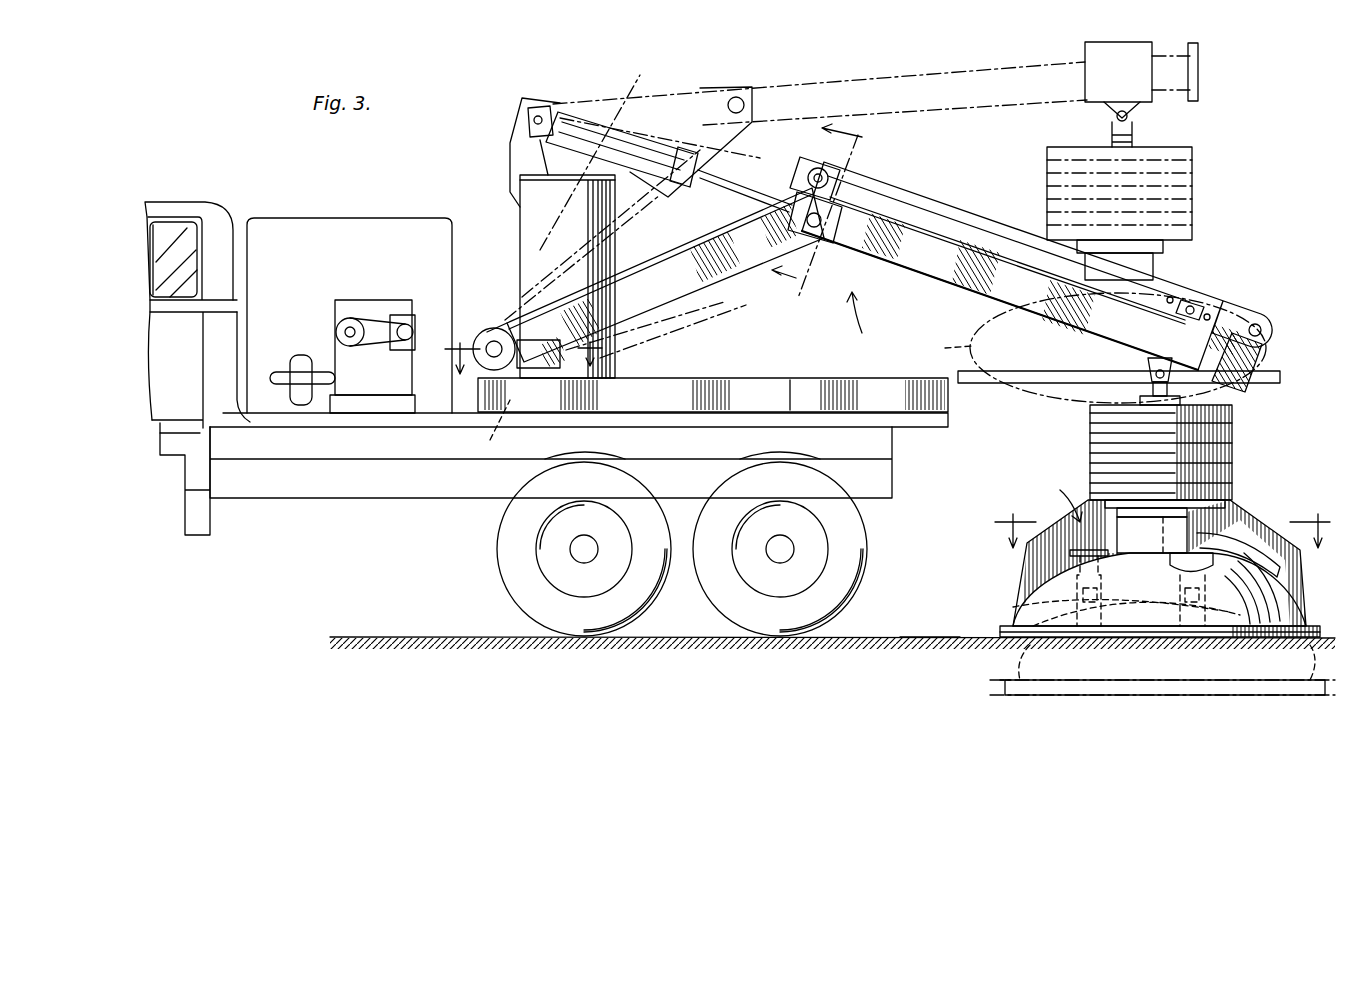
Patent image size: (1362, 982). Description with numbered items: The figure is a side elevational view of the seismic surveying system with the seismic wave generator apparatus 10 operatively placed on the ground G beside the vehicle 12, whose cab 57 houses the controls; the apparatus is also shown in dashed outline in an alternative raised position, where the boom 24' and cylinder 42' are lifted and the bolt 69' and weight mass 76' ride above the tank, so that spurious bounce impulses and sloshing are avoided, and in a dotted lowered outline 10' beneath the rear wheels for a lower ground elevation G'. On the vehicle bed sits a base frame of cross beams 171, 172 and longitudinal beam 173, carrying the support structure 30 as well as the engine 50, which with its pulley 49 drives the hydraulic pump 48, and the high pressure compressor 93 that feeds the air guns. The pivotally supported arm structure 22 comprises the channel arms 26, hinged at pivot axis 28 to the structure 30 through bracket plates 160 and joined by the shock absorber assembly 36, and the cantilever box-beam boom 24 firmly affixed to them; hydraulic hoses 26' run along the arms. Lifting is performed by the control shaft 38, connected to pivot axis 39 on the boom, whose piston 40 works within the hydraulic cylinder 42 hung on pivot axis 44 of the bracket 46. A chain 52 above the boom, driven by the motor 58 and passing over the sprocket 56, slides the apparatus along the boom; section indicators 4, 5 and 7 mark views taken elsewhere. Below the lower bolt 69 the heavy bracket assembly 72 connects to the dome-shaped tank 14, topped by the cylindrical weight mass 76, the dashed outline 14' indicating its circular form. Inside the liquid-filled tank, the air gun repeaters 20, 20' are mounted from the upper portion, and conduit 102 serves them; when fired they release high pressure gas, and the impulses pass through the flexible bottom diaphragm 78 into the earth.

The cab 57 is at (228, 202).
The vehicle 12 is at (432, 490).
The high pressure compressor 93 is at (365, 218).
The engine 50 is at (358, 300).
The pulley 49 is at (345, 332).
The hydraulic pump 48 is at (420, 315).
The support structure 30 is at (520, 232).
The bracket 46 is at (520, 95).
The pivot axis 44 is at (540, 108).
The hydraulic cylinder 42 is at (649, 127).
The raised cylinder position 42' is at (603, 143).
The piston 40 is at (655, 185).
The channel arms 26 is at (668, 238).
The hydraulic hose 26' is at (623, 252).
The control shaft 38 is at (740, 195).
The pivot axis 28 is at (488, 326).
The shock absorber assembly 36 is at (475, 333).
The bracket plates 160 is at (550, 369).
The motor 58 is at (810, 162).
The pivot axis 39 is at (825, 226).
The section line 5- 5 is at (824, 212).
The boom 24 is at (1037, 266).
The raised boom position 24' is at (875, 74).
The chain 52 is at (1205, 298).
The sprocket 56 is at (1272, 330).
The raised pivot position 69' is at (1094, 124).
The raised weight position 76' is at (1163, 213).
The arm structure 22 is at (869, 321).
The bottom 78 is at (1048, 408).
The ring outline 14' is at (945, 348).
The bracket assembly 72 is at (1242, 400).
The lower bolt 69 is at (1133, 376).
The weight mass 76 is at (1188, 479).
The tank 14 is at (1170, 568).
The air gun repeater 20 is at (1045, 588).
The air gun repeater 20' is at (1214, 589).
The conduit 102 is at (1265, 540).
The section line 7- 7 is at (1163, 541).
The seismic wave generator apparatus 10 is at (1064, 496).
The section line 4- 4 is at (524, 369).
The cross beam 172 is at (615, 395).
The cross beam 171 is at (487, 427).
The longitudinal beam 173 is at (790, 385).
The ground G is at (930, 617).
The lower ground elevation G' is at (1146, 670).
The lowered apparatus position 10' is at (977, 707).